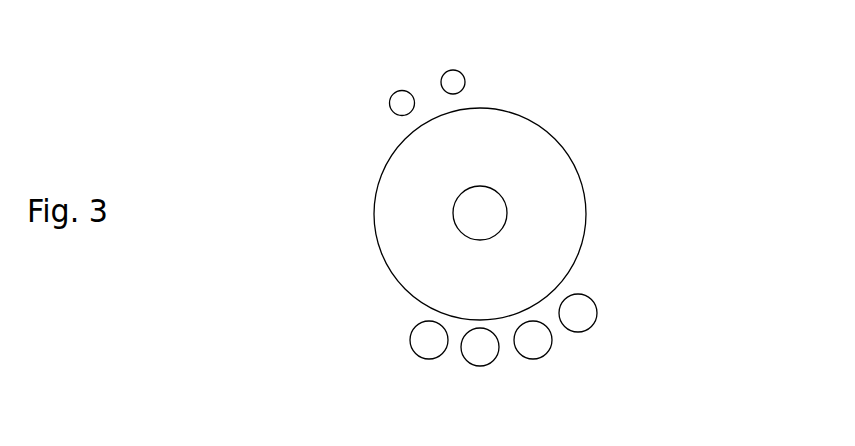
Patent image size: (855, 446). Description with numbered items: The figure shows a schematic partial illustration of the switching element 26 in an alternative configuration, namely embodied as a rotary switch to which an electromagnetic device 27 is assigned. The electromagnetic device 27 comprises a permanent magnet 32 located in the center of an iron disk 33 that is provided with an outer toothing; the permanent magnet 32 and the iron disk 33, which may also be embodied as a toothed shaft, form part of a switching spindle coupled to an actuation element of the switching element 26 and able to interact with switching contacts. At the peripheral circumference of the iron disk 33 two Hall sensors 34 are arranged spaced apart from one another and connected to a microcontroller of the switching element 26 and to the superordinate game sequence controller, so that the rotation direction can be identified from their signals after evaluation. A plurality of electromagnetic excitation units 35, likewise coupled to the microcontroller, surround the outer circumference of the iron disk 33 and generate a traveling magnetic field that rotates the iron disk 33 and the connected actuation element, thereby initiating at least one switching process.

The switching element 26 is at (274, 264).
The electromagnetic device 27 is at (642, 224).
The permanent magnet 32 is at (507, 212).
The iron disk 33 is at (563, 145).
The Hall sensors 34 is at (400, 98).
The electromagnetic excitation units 35 is at (425, 339).